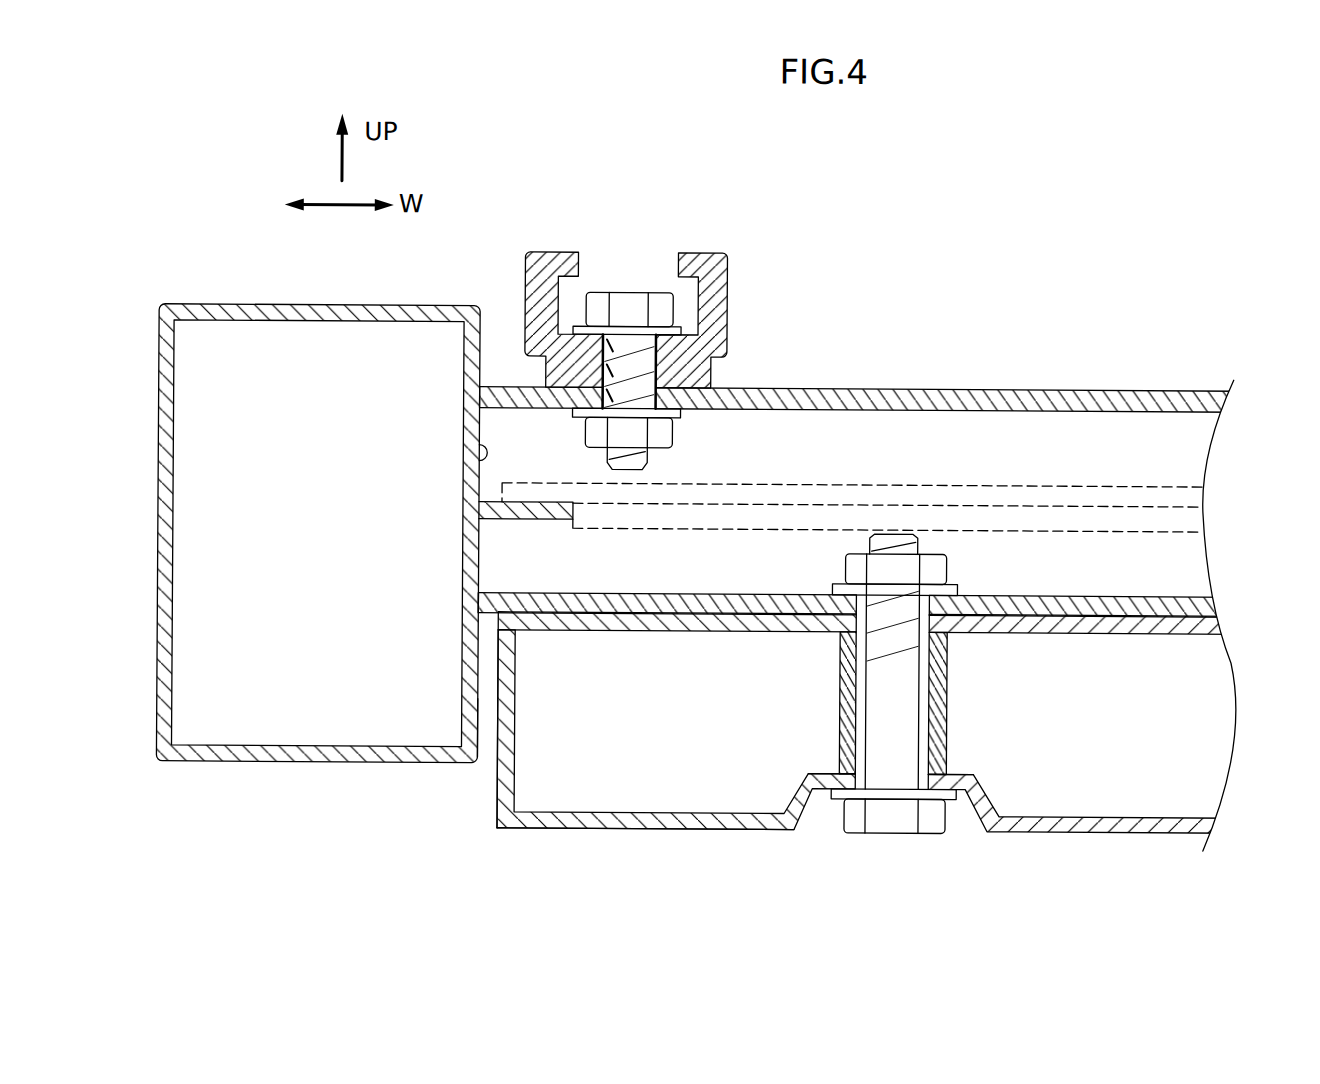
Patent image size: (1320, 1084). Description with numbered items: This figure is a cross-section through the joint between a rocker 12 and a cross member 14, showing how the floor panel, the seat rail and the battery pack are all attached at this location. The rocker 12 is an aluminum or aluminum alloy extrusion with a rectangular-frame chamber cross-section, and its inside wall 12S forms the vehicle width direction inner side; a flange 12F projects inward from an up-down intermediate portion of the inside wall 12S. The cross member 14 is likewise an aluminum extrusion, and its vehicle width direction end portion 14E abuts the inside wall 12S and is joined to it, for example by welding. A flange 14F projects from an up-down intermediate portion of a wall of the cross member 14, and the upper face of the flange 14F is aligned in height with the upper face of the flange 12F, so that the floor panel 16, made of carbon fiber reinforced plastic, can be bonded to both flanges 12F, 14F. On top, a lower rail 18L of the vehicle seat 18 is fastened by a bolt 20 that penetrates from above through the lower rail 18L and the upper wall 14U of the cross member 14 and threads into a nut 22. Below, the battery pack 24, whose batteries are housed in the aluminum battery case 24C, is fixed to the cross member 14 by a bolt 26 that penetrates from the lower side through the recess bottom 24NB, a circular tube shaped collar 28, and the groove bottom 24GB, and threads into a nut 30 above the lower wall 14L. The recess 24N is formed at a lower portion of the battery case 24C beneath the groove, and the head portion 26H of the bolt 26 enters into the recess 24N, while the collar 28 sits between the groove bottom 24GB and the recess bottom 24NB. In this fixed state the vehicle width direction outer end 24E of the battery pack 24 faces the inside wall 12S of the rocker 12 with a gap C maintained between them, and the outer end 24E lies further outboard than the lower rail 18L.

The rocker 12 is at (374, 494).
The inside wall 12S is at (482, 449).
The flange 12F is at (522, 521).
The cross member 14 is at (802, 448).
The upper wall 14U is at (985, 400).
The lower wall 14L is at (1128, 608).
The vehicle width direction end portion 14E is at (478, 600).
The flange 14F is at (660, 533).
The floor panel 16 is at (728, 482).
The lower rail 18L is at (723, 314).
The vehicle seat 18 is at (735, 294).
The bolt 20 is at (623, 298).
The nut 22 is at (670, 435).
The battery pack 24 is at (861, 768).
The groove bottom 24GB is at (705, 625).
The vehicle width direction outer end 24E is at (500, 792).
The battery case 24C is at (640, 831).
The recess bottom 24NB is at (843, 774).
The recess 24N is at (966, 826).
The bolt 26 is at (888, 729).
The head portion 26H is at (897, 821).
The collar 28 is at (948, 690).
The nut 30 is at (935, 572).
The gap C is at (488, 746).